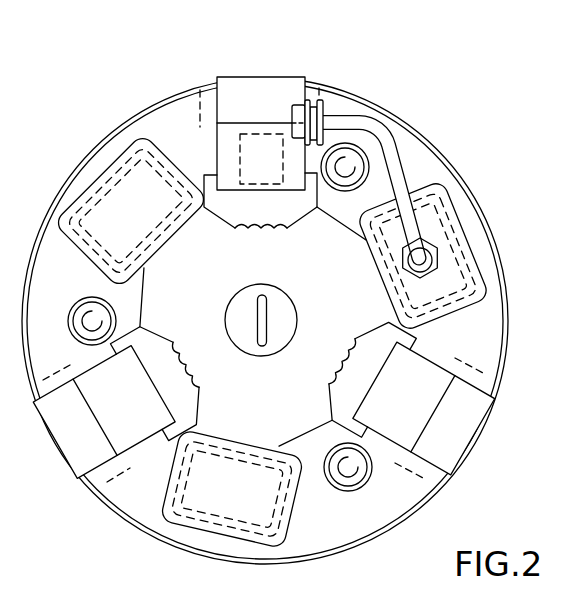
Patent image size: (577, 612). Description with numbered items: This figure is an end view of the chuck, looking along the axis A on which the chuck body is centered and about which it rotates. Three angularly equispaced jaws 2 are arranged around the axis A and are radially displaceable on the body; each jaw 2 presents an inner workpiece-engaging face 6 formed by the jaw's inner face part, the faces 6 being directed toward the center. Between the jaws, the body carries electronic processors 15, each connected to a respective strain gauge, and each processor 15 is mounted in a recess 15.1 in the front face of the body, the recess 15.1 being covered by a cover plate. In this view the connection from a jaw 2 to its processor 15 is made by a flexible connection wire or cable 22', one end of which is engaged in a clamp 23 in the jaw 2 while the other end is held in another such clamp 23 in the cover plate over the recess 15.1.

The jaw 2 is at (256, 90).
The inner workpiece-engaging face 6 is at (259, 236).
The electronic processor 15 is at (115, 205).
The recess 15.1 is at (452, 254).
The flexible connection wire or cable 22' is at (394, 170).
The clamp 23 is at (310, 116).
The axis A is at (264, 319).